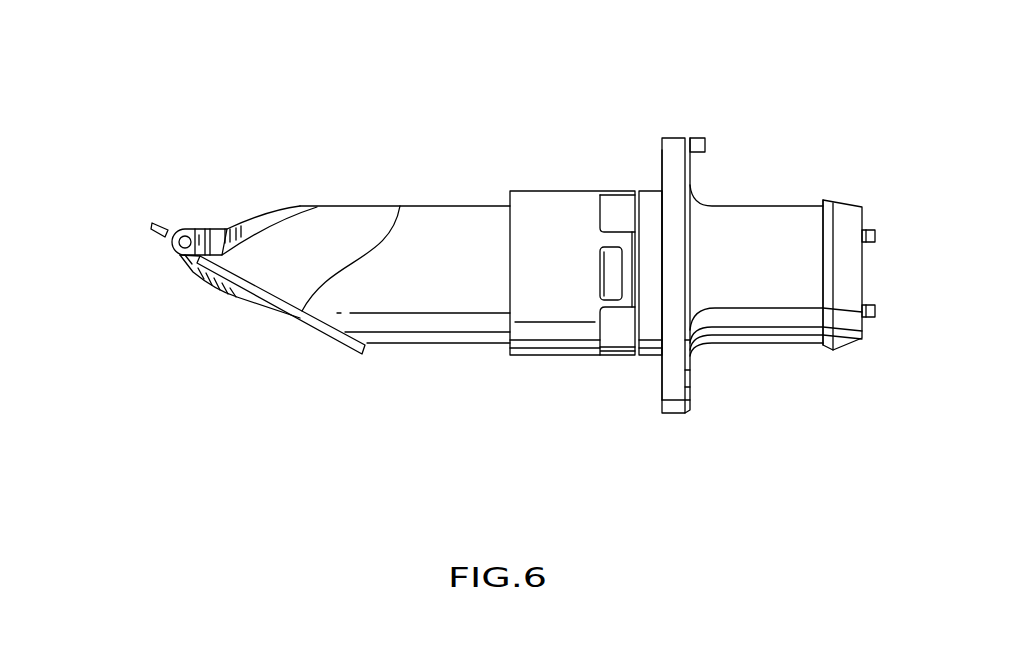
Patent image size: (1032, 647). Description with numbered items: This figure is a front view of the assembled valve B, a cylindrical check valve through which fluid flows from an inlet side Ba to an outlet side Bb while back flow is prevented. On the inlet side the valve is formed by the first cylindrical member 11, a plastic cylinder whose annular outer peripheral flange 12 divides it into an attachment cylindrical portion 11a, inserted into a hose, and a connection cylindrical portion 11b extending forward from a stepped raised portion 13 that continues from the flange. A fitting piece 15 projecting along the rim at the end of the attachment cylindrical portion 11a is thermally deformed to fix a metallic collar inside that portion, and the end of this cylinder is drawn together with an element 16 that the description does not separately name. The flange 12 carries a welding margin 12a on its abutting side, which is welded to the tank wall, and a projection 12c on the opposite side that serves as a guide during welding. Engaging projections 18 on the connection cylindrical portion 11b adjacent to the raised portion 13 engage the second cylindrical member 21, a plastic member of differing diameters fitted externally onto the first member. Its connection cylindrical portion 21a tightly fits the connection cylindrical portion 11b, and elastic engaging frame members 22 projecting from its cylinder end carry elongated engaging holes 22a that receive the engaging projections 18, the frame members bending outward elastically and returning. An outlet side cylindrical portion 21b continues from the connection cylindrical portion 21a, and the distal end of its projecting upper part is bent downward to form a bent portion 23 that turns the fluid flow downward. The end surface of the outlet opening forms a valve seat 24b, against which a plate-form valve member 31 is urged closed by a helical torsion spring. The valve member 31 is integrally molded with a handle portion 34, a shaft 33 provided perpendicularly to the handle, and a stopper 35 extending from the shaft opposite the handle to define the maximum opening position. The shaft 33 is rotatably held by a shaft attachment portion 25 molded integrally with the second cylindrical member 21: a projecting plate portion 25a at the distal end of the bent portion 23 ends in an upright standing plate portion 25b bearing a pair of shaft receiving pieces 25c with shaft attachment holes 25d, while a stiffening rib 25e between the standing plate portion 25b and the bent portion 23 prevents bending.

The first cylindrical member 11 is at (733, 345).
The attachment cylindrical portion 11a is at (767, 345).
The connection cylindrical portion 11b is at (617, 347).
The outer peripheral flange 12 is at (675, 147).
The welding margin 12a is at (657, 157).
The projection 12c is at (705, 140).
The stepped raised portion 13 is at (653, 355).
The fitting piece 15 is at (876, 230).
The end cap 16 is at (830, 200).
The engaging projection 18 is at (612, 288).
The second cylindrical member 21 is at (421, 460).
The connection cylindrical portion 21a is at (515, 355).
The outlet side cylindrical portion 21b is at (395, 345).
The elastic engaging frame member 22 is at (620, 230).
The engaging hole 22a is at (600, 257).
The bent portion 23 is at (260, 228).
The valve seat 24b is at (400, 206).
The shaft attachment portion 25 is at (235, 215).
The projecting plate portion 25a is at (195, 272).
The standing plate portion 25b is at (208, 231).
The shaft receiving piece 25c is at (193, 231).
The shaft attachment hole 25d is at (180, 255).
The stiffening rib 25e is at (227, 231).
The valve member 31 is at (330, 337).
The shaft 33 is at (178, 245).
The handle portion 34 is at (188, 266).
The stopper 35 is at (172, 235).
The valve B is at (787, 137).
The inlet side Ba is at (822, 205).
The outlet side Bb is at (280, 213).